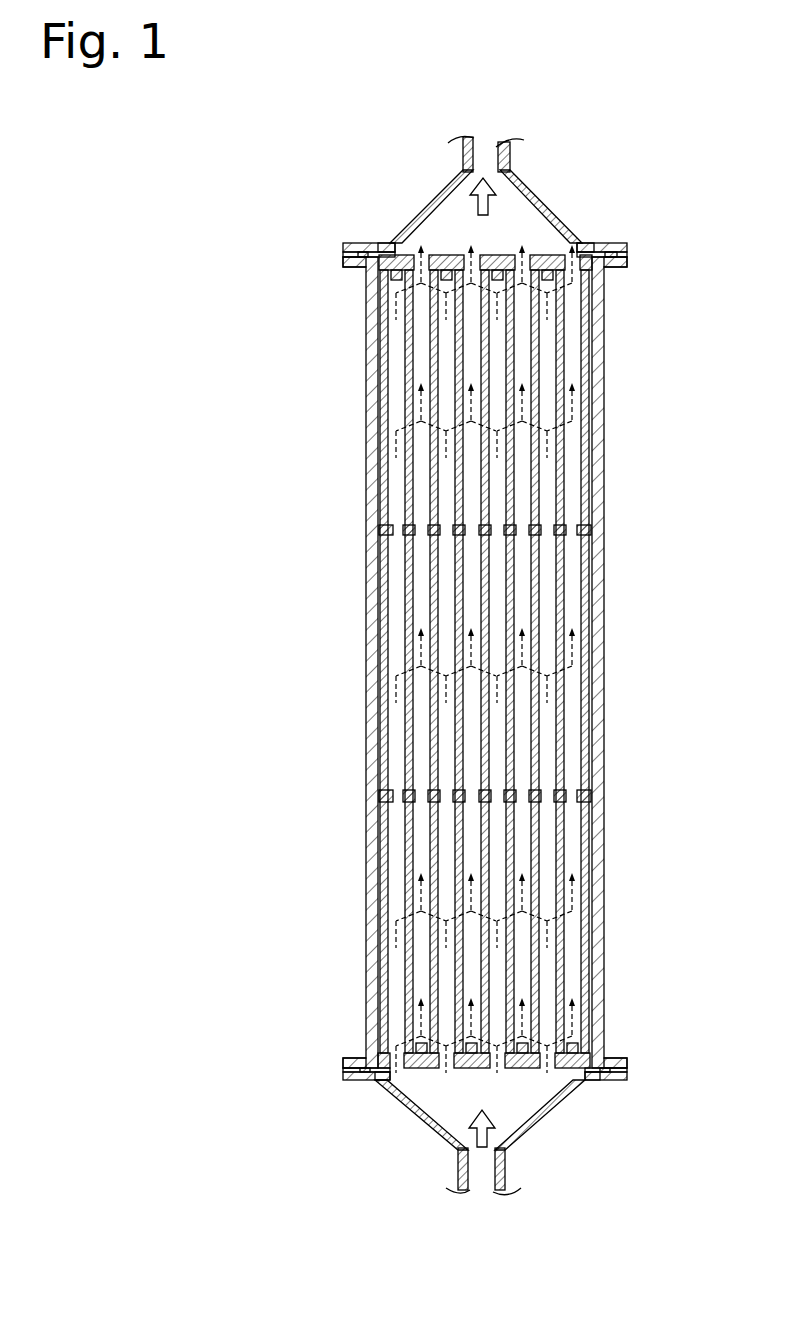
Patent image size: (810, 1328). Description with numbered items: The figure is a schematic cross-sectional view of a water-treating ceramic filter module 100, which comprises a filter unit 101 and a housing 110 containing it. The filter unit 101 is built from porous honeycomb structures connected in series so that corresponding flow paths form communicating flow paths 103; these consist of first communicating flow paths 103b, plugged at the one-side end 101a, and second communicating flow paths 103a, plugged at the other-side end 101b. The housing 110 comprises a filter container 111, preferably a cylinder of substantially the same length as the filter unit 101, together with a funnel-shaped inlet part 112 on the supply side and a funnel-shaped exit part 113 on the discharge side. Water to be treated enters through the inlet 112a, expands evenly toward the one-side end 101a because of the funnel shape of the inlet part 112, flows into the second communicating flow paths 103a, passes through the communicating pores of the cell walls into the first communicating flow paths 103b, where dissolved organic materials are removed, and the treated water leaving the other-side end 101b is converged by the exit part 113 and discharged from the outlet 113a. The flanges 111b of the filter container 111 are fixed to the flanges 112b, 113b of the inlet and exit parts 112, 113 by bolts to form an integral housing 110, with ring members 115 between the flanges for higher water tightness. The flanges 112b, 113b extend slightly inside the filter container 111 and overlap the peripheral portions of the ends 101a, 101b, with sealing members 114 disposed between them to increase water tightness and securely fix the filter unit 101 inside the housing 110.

The water-treating ceramic filter module 100 is at (292, 153).
The filter unit 101 is at (563, 664).
The one-side end 101a is at (540, 1073).
The other-side end 101b is at (518, 247).
The communicating flow paths 103 is at (652, 661).
The second communicating flow paths 103a is at (565, 338).
The first communicating flow paths 103b is at (578, 372).
The housing 110 is at (252, 523).
The filter container 111 is at (367, 623).
The flanges of the filter container 111b is at (610, 268).
The inlet part 112 is at (343, 1070).
The inlet 112a is at (482, 1170).
The flange of the inlet part 112b is at (600, 1079).
The exit part 113 is at (343, 252).
The outlet 113a is at (488, 153).
The flange of the exit part 113b is at (608, 245).
The sealing members 114 is at (382, 248).
The ring members 115 is at (627, 255).